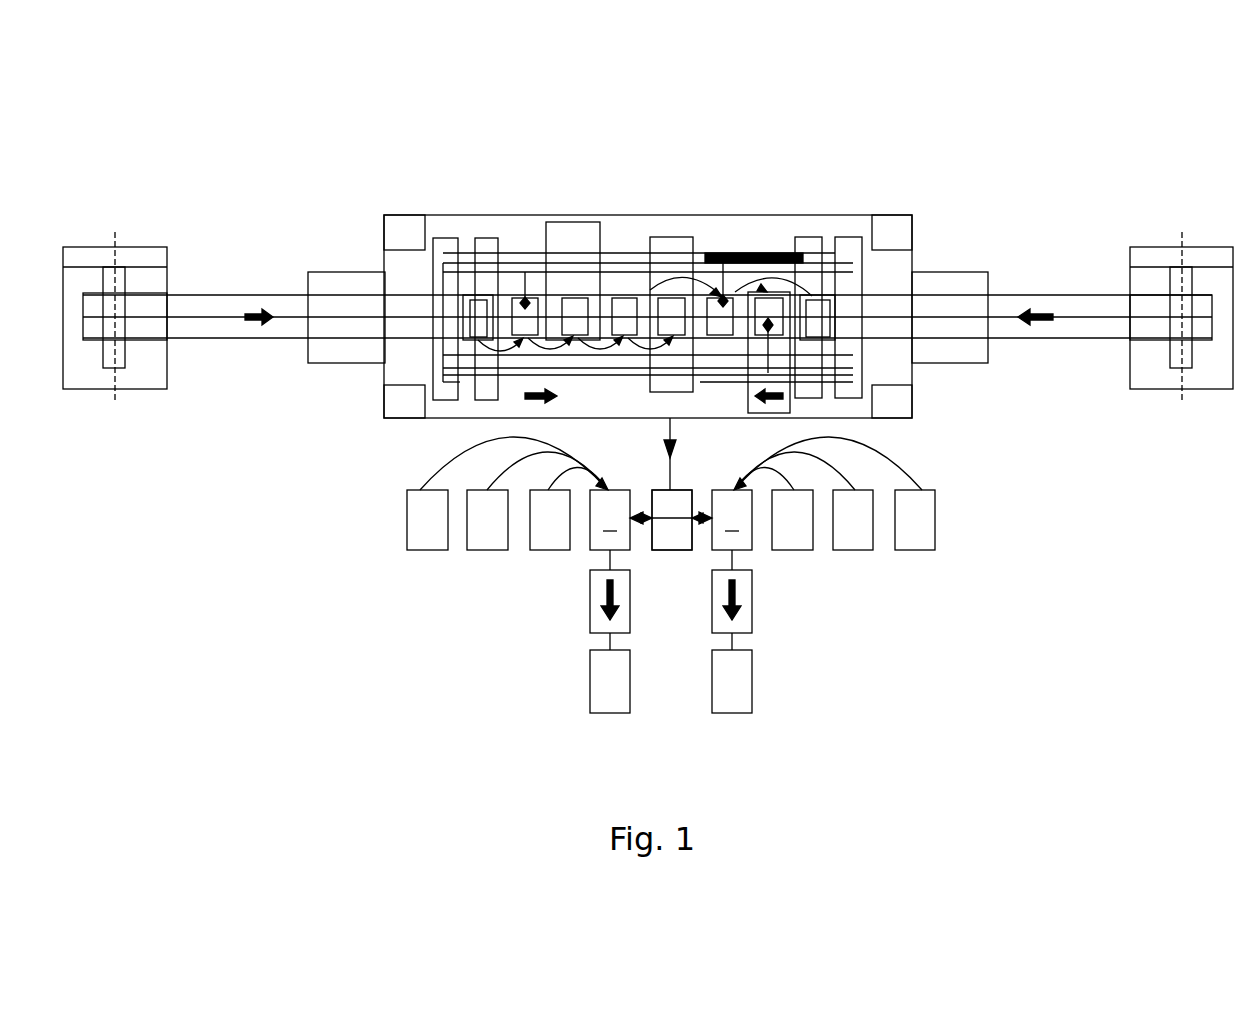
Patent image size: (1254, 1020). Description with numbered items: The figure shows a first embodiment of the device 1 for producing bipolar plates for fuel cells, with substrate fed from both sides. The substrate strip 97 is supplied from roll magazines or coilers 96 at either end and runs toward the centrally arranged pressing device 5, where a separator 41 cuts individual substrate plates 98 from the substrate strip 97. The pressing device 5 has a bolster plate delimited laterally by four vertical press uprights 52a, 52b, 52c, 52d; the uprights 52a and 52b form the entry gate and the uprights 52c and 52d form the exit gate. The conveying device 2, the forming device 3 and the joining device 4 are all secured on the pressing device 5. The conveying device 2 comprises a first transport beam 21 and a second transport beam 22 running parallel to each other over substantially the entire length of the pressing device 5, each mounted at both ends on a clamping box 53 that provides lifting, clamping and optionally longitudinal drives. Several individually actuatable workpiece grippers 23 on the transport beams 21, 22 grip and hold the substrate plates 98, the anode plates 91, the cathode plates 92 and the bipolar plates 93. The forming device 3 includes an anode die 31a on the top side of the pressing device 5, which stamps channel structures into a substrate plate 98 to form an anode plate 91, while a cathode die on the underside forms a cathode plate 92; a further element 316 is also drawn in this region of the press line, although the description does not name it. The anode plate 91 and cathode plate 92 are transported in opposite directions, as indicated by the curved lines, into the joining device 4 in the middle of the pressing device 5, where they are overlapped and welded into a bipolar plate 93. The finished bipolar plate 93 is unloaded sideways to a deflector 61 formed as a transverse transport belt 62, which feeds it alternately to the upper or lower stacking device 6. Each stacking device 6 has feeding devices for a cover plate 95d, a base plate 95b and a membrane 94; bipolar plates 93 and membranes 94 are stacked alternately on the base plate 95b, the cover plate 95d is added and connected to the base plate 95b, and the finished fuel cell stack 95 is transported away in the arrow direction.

The device for producing bipolar plates 1 is at (262, 685).
The conveying device 2 is at (463, 408).
The forming device 3 is at (602, 180).
The joining device 4 is at (672, 237).
The pressing device 5 is at (925, 180).
The stacking device 6 is at (671, 543).
The first transport beam 21 is at (720, 260).
The second transport beam 22 is at (725, 373).
The workpiece gripper 23 is at (576, 332).
The anode die 31a is at (553, 228).
The separator 41 is at (487, 243).
The press upright 52a is at (399, 233).
The press upright 52b is at (398, 408).
The press upright 52c is at (903, 233).
The press upright 52d is at (905, 403).
The clamping box 53 is at (435, 347).
The deflector 61 is at (672, 538).
The transverse transport belt 62 is at (672, 520).
The anode plate 91 is at (574, 302).
The cathode plate 92 is at (768, 297).
The bipolar plate 93 is at (669, 300).
The membrane 94 is at (548, 538).
The fuel cell stack 95 is at (598, 692).
The base plate 95b is at (485, 538).
The cover plate 95d is at (425, 538).
The coiler 96 is at (78, 250).
The substrate strip 97 is at (212, 302).
The substrate plate 98 is at (463, 297).
The rotor segment 316 is at (773, 403).